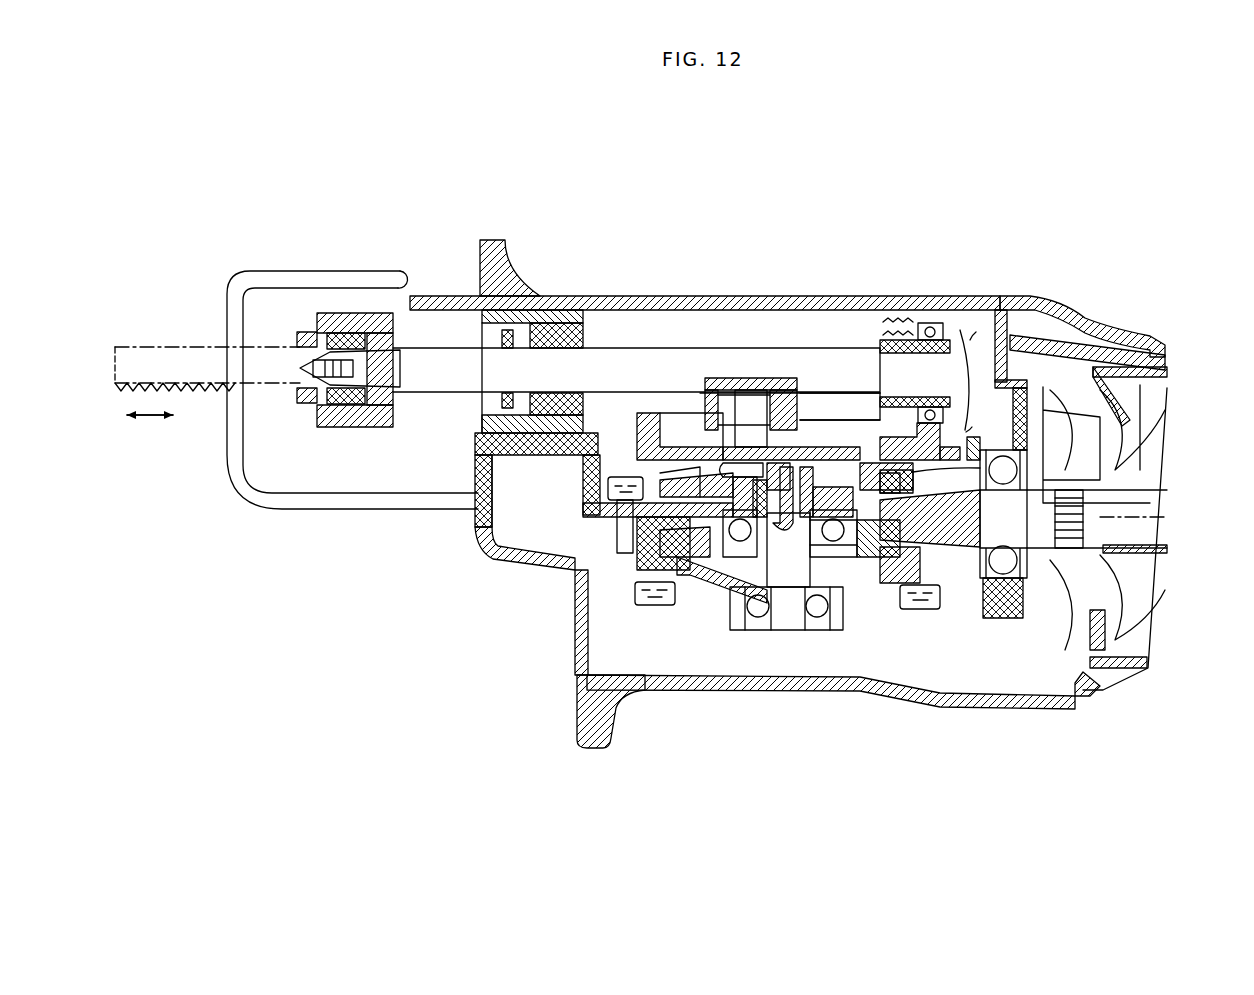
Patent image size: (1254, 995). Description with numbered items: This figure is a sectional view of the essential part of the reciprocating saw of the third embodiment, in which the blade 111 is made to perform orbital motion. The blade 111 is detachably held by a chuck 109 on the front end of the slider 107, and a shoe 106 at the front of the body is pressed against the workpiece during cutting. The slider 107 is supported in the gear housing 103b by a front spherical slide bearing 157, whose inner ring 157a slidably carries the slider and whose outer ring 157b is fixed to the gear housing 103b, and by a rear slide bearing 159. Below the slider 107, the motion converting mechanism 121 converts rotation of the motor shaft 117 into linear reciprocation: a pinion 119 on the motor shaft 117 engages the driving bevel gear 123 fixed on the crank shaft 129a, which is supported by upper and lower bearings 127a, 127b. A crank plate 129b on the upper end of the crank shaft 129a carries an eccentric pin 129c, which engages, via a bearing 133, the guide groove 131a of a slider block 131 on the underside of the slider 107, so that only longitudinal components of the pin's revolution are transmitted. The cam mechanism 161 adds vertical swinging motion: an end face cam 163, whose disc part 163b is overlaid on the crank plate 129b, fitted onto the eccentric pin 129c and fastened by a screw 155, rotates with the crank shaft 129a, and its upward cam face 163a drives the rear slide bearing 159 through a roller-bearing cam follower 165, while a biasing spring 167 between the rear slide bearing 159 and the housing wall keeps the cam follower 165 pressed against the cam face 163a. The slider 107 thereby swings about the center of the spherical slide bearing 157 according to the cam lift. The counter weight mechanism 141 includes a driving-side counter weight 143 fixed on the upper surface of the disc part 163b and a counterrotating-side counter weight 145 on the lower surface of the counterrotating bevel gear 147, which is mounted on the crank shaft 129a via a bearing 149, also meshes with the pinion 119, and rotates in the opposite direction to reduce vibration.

The gear housing 103b is at (440, 294).
The shoe 106 is at (230, 465).
The slider 107 is at (577, 358).
The chuck 109 is at (337, 312).
The blade 111 is at (155, 338).
The motor shaft 117 is at (1040, 535).
The pinion 119 is at (940, 575).
The motion converting mechanism 121 is at (877, 577).
The driving bevel gear 123 is at (920, 550).
The upper bearing 127a is at (835, 560).
The lower bearing 127b is at (757, 632).
The crank shaft 129a is at (790, 592).
The crank plate 129b is at (690, 470).
The eccentric pin 129c is at (742, 445).
The slider block 131 is at (775, 392).
The guide groove 131a is at (762, 392).
The bearing 133 is at (697, 470).
The counter weight mechanism 141 is at (924, 335).
The driving-side counter weight 143 is at (913, 432).
The counterrotating-side counter weight 145 is at (1027, 476).
The counterrotating bevel gear 147 is at (637, 553).
The bearing 149 is at (730, 560).
The screw 155 is at (850, 447).
The spherical slide bearing 157 is at (556, 318).
The inner ring 157a is at (560, 440).
The outer ring 157b is at (560, 425).
The rear slide bearing 159 is at (978, 340).
The cam mechanism 161 is at (945, 442).
The end face cam 163 is at (650, 410).
The cam face 163a is at (856, 430).
The disc part 163b is at (835, 447).
The cam follower 165 is at (942, 330).
The biasing spring 167 is at (905, 320).